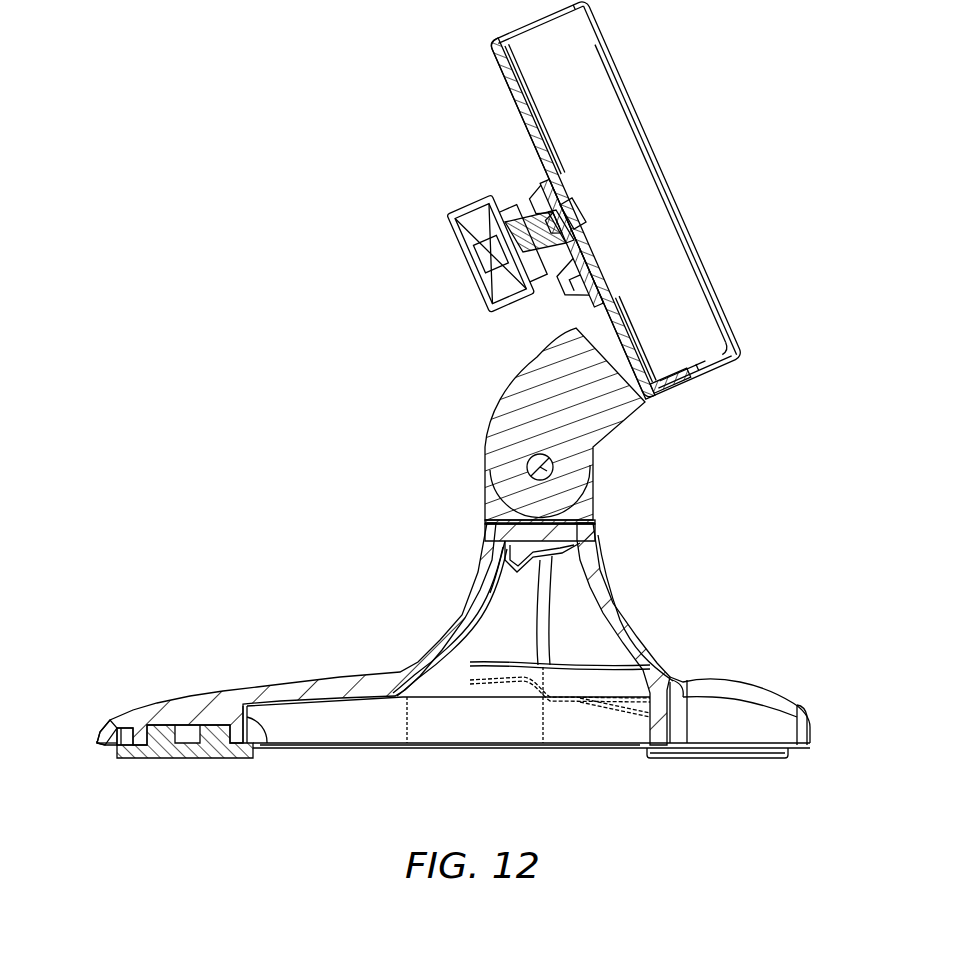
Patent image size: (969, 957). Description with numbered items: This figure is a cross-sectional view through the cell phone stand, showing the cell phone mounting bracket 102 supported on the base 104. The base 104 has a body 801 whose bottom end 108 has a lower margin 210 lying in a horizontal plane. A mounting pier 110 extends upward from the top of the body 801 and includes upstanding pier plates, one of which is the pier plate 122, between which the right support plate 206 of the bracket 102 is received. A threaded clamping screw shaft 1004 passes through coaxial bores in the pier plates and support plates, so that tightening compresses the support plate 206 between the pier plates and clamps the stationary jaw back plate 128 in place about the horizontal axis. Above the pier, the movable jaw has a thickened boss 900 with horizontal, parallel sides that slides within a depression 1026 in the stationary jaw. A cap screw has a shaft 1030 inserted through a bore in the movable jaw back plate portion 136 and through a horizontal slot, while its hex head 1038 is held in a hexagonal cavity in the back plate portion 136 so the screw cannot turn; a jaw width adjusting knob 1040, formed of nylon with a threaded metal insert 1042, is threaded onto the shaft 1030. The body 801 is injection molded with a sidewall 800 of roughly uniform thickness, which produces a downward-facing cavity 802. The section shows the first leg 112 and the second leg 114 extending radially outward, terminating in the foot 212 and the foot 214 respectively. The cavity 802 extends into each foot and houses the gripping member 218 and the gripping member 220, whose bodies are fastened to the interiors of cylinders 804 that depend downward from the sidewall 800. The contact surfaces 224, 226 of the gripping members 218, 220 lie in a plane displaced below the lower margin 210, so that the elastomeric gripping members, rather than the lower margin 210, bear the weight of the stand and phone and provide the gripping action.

The cell phone mounting bracket 102 is at (647, 46).
The stationary jaw back plate 128 is at (492, 78).
The movable jaw back plate portion 136 is at (556, 163).
The depression 1026 is at (532, 184).
The shaft of cap screw 1030 is at (546, 272).
The hex head of cap screw 1038 is at (578, 214).
The jaw width adjusting knob 1040 is at (446, 214).
The threaded metal insert 1042 is at (482, 252).
The thickened boss 900 is at (584, 252).
The right support plate 206 is at (506, 378).
The threaded clamping screw shaft 1004 is at (522, 462).
The mounting pier 110 is at (464, 492).
The pier plate 122 is at (578, 508).
The second leg 114 is at (180, 700).
The body of base 801 is at (458, 626).
The sidewall 800 is at (626, 638).
The first leg 112 is at (752, 692).
The foot 212 is at (800, 708).
The foot 214 is at (98, 718).
The bottom end 108 is at (373, 740).
The lower margin 210 is at (456, 750).
The downward-facing cavity 802 is at (518, 716).
The cylinder 804 is at (262, 738).
The gripping member 220 is at (204, 754).
The contact surface 226 is at (142, 758).
The gripping member 218 is at (692, 758).
The contact surface 224 is at (736, 759).
The base 104 is at (292, 664).